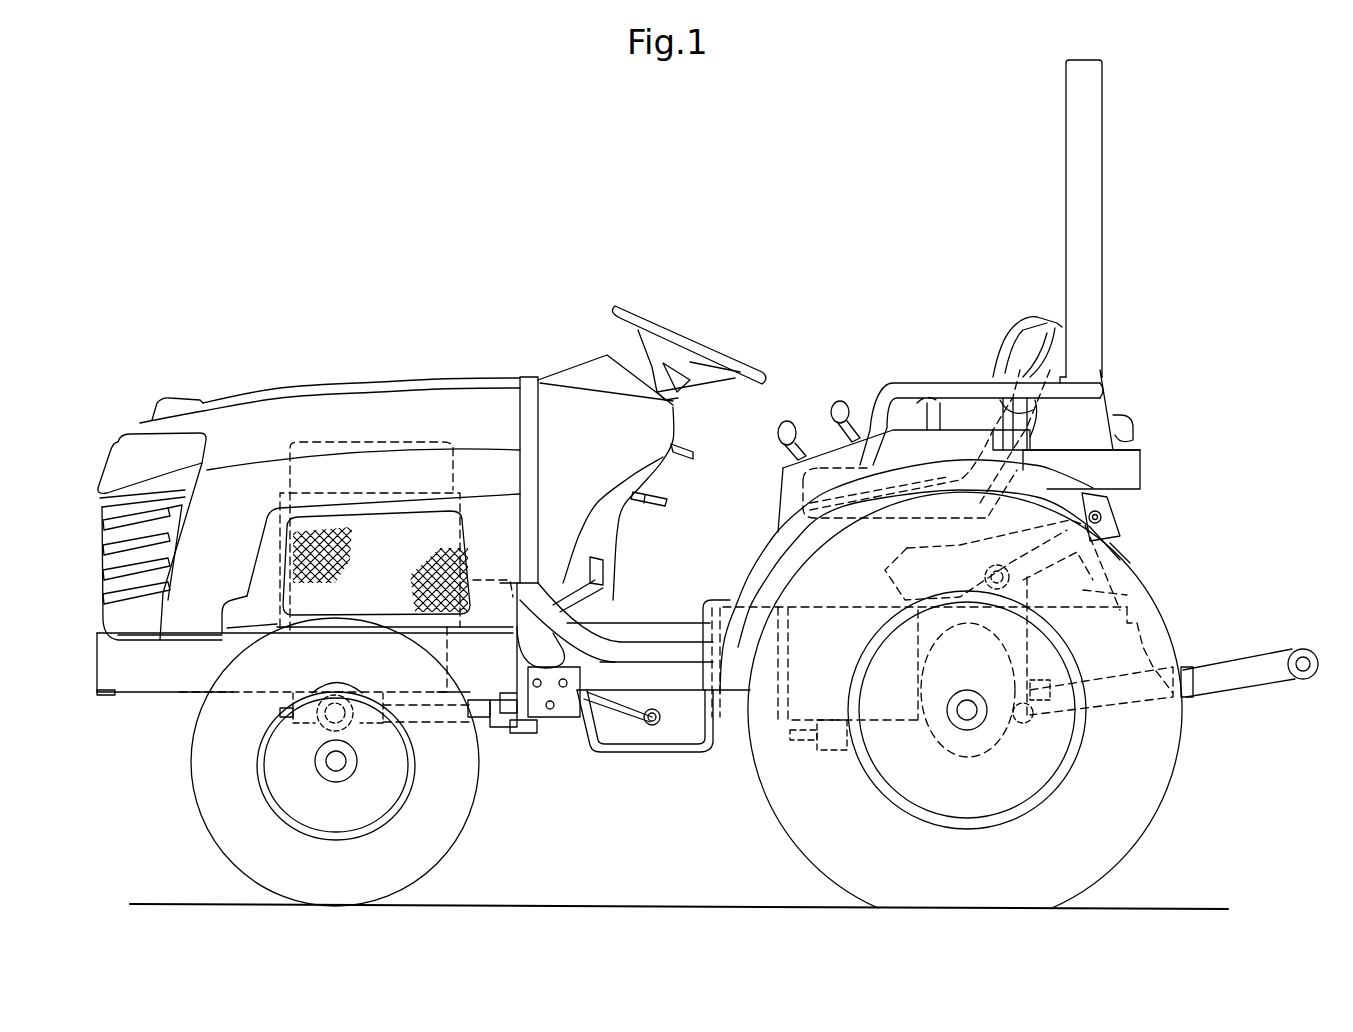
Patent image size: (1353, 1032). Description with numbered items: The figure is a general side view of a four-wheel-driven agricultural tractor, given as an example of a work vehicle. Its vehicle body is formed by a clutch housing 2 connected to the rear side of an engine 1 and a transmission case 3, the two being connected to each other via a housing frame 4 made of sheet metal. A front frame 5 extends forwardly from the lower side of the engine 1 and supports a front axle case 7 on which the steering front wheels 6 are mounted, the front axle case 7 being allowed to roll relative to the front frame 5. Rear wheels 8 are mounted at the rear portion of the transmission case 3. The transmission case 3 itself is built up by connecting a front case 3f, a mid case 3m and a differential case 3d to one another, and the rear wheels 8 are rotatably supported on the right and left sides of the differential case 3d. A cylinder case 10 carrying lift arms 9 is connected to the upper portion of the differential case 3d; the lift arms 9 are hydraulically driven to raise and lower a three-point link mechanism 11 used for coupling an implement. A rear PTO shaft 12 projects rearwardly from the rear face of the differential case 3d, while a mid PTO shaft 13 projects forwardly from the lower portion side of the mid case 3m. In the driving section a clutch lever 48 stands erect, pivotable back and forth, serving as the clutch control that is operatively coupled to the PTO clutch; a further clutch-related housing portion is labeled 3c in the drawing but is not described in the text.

The engine 1 is at (367, 442).
The clutch housing 2 is at (485, 700).
The transmission case 3 is at (822, 600).
The front case 3f is at (725, 606).
The clutch housing 3c is at (832, 750).
The mid case 3m is at (890, 730).
The differential case 3d is at (1050, 640).
The housing frame 4 is at (680, 735).
The front frame 5 is at (150, 692).
The front wheels 6 is at (203, 805).
The front axle case 7 is at (325, 723).
The rear wheels 8 is at (1147, 822).
The lift arms 9 is at (1087, 490).
The cylinder case 10 is at (955, 560).
The three-point link mechanism 11 is at (1240, 650).
The rear PTO shaft 12 is at (1083, 666).
The mid PTO shaft 13 is at (805, 742).
The clutch lever 48 is at (778, 430).